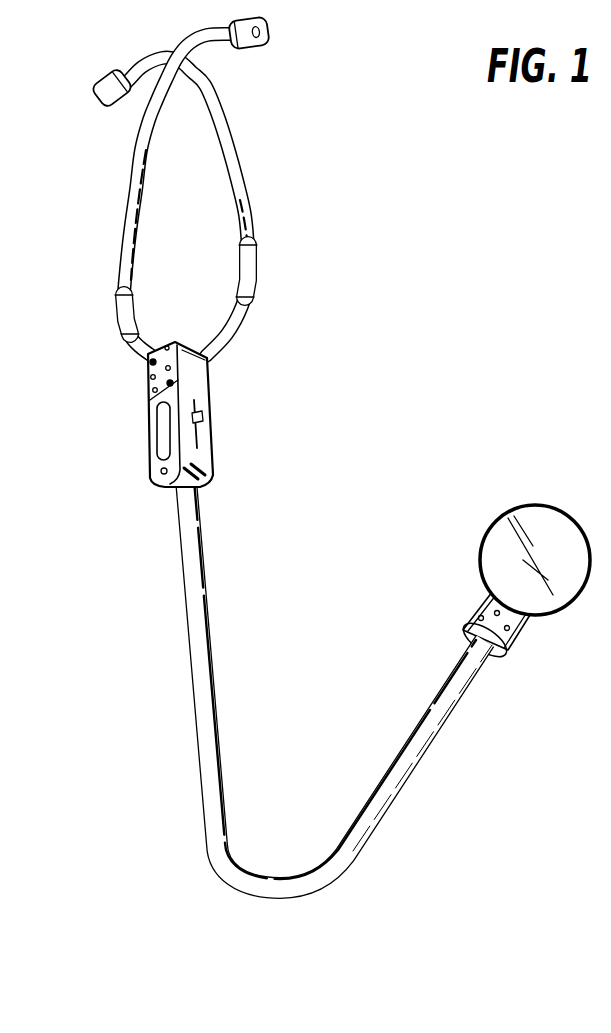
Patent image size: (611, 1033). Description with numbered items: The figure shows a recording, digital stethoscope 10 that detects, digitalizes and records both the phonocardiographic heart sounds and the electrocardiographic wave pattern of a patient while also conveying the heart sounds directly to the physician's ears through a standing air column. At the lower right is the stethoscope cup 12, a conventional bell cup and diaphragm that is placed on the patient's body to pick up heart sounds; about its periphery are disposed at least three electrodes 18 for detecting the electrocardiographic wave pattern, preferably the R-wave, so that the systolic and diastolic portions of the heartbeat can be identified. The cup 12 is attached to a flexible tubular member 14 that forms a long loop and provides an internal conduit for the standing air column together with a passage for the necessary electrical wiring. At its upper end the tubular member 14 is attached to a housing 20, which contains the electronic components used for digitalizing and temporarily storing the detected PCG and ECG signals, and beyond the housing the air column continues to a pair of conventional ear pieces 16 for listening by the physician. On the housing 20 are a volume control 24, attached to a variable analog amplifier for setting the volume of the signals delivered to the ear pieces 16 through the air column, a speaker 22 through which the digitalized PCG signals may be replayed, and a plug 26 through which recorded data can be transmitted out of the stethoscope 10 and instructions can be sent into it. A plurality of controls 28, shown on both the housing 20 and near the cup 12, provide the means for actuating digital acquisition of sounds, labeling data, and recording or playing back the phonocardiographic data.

The recording, digital stethoscope 10 is at (166, 639).
The stethoscope cup 12 is at (532, 523).
The flexible tubular member 14 is at (218, 710).
The ear pieces 16 is at (232, 142).
The electrodes 18 is at (480, 570).
The housing 20 is at (215, 472).
The speaker 22 is at (160, 416).
The volume control 24 is at (203, 420).
The plug 26 is at (150, 478).
The controls 28 is at (172, 368).